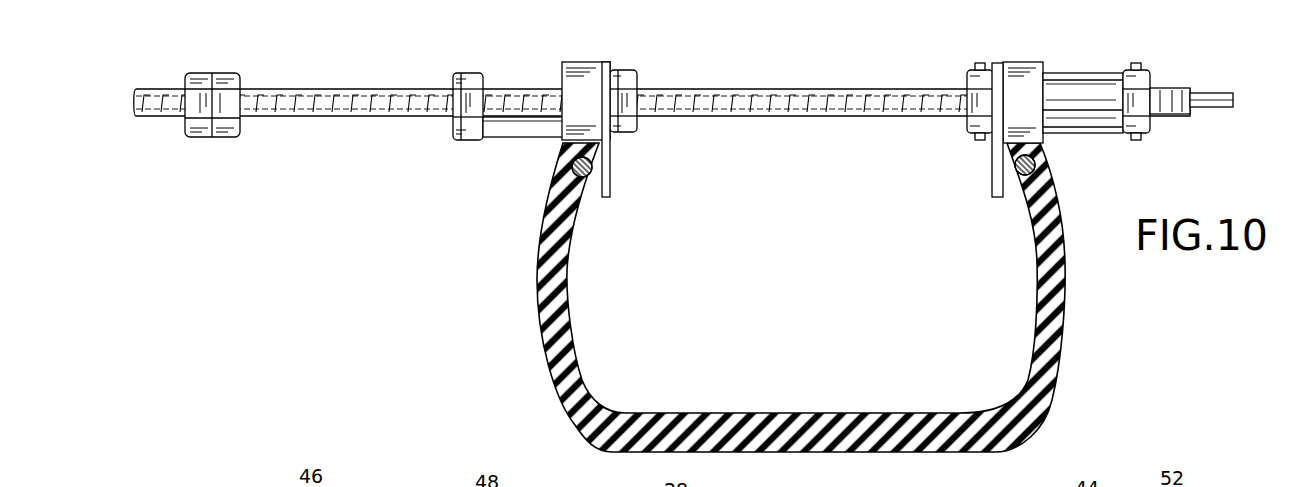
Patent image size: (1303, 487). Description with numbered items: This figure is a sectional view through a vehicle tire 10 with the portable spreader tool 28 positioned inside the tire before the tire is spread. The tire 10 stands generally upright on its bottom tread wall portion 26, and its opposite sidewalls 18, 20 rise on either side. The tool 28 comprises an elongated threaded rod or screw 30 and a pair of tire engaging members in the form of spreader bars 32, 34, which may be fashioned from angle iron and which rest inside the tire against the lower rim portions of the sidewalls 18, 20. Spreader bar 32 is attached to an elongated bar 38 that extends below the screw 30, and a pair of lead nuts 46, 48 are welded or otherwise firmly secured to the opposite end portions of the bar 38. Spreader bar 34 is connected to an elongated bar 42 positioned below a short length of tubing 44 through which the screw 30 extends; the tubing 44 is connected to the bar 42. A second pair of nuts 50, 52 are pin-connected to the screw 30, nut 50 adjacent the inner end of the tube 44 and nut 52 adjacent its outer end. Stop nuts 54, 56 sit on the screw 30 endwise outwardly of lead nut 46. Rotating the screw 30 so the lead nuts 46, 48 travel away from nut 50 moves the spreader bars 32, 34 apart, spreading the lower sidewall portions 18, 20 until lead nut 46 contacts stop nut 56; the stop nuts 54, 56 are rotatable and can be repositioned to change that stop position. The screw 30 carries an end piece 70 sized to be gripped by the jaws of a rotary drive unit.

The vehicle tire 10 is at (516, 318).
The sidewall 18 is at (568, 265).
The sidewall 20 is at (1036, 246).
The bottom tread wall portion 26 is at (801, 315).
The spreader tool 28 is at (662, 90).
The threaded rod or screw 30 is at (813, 116).
The spreader bar 32 is at (611, 190).
The spreader bar 34 is at (992, 170).
The elongated bar 38 is at (516, 137).
The elongated bar 42 is at (1076, 146).
The tubing 44 is at (1068, 85).
The lead nut 46 is at (465, 73).
The lead nut 48 is at (636, 72).
The nut 50 is at (973, 69).
The nut 52 is at (1134, 96).
The stop nut 54 is at (199, 137).
The stop nut 56 is at (234, 137).
The end piece 70 is at (1208, 93).